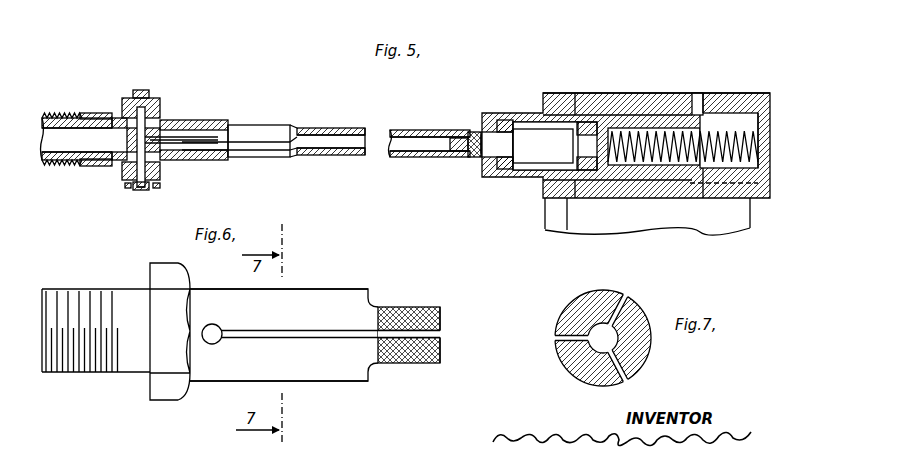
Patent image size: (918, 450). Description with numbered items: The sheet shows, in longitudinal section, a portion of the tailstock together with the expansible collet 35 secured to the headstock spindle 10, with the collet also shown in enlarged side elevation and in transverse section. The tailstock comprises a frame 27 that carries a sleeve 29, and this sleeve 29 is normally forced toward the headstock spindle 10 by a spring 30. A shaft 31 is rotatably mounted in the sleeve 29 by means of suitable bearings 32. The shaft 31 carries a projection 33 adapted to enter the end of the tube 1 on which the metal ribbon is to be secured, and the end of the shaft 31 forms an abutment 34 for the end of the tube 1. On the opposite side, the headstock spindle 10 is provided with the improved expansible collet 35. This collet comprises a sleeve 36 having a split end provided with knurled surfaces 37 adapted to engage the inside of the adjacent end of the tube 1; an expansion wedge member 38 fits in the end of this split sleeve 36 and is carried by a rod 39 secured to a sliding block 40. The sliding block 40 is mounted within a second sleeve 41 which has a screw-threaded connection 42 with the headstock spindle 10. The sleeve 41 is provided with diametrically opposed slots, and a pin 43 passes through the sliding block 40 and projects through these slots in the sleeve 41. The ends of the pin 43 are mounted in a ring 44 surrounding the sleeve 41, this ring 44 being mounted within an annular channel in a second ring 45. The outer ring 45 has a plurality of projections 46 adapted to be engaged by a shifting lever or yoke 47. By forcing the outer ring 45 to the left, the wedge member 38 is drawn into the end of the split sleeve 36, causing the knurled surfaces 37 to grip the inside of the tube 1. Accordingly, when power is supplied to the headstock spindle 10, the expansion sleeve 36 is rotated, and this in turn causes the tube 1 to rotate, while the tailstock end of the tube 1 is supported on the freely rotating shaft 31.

In FIG. 5, the tube 1 is at (412, 130).
In FIG. 5, the headstock spindle 10 is at (708, 84).
In FIG. 5, the frame 27 is at (660, 223).
In FIG. 5, the sleeve 29 is at (655, 112).
In FIG. 5, the spring 30 is at (725, 125).
In FIG. 5, the shaft 31 is at (563, 138).
In FIG. 5, the bearings 32 is at (495, 114).
In FIG. 5, the projection 33 is at (462, 150).
In FIG. 5, the abutment 34 is at (470, 131).
In FIG. 5, the expansible collet 35 is at (282, 112).
In FIG. 6, the expansible collet 35 is at (325, 286).
In FIG. 5, the sleeve 36 is at (250, 158).
In FIG. 6, the sleeve 36 is at (330, 382).
In FIG. 7, the sleeve 36 is at (580, 298).
In FIG. 5, the knurled surfaces 37 is at (320, 128).
In FIG. 6, the knurled surfaces 37 is at (414, 308).
In FIG. 5, the expansion wedge member 38 is at (300, 152).
In FIG. 5, the rod 39 is at (200, 139).
In FIG. 5, the sliding block 40 is at (184, 121).
In FIG. 5, the second sleeve 41 is at (105, 113).
In FIG. 5, the screw-threaded connection 42 is at (68, 161).
In FIG. 5, the pin 43 is at (148, 100).
In FIG. 5, the ring 44 is at (122, 166).
In FIG. 5, the second ring 45 is at (140, 189).
In FIG. 5, the projections 46 is at (140, 90).
In FIG. 5, the shifting lever or yoke 47 is at (126, 188).